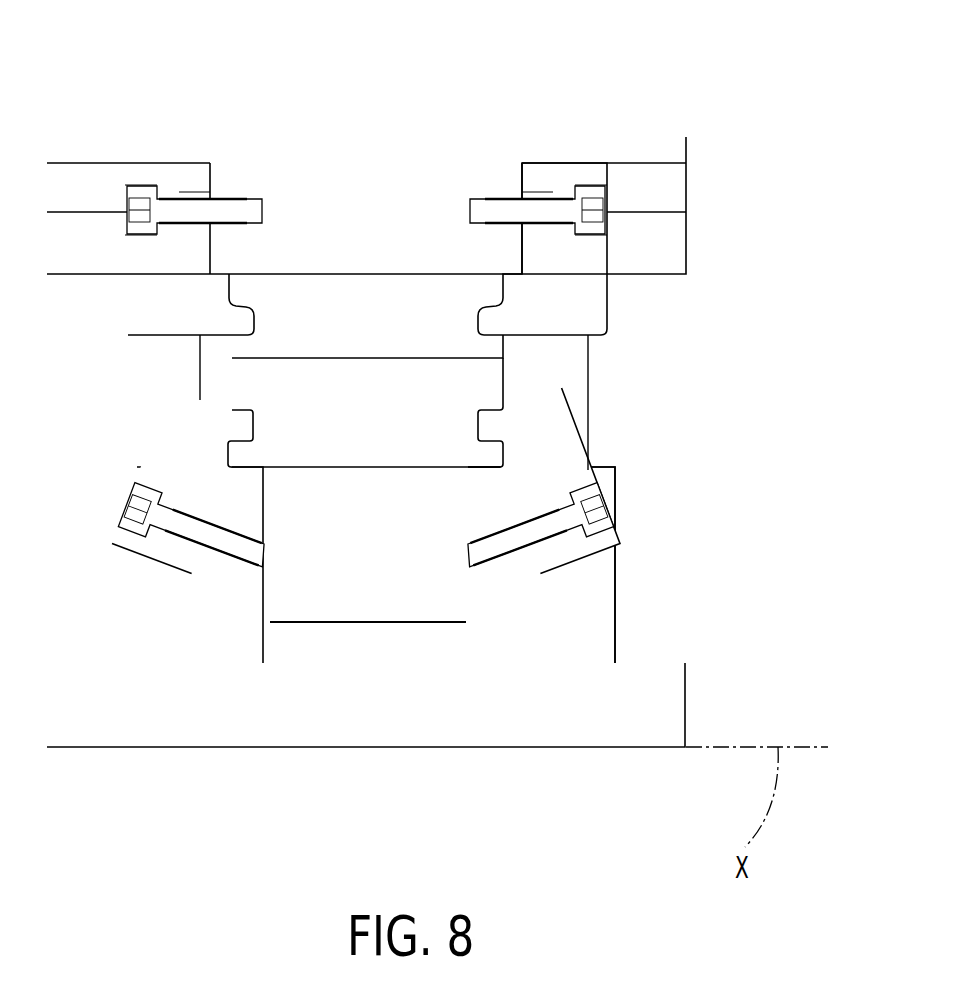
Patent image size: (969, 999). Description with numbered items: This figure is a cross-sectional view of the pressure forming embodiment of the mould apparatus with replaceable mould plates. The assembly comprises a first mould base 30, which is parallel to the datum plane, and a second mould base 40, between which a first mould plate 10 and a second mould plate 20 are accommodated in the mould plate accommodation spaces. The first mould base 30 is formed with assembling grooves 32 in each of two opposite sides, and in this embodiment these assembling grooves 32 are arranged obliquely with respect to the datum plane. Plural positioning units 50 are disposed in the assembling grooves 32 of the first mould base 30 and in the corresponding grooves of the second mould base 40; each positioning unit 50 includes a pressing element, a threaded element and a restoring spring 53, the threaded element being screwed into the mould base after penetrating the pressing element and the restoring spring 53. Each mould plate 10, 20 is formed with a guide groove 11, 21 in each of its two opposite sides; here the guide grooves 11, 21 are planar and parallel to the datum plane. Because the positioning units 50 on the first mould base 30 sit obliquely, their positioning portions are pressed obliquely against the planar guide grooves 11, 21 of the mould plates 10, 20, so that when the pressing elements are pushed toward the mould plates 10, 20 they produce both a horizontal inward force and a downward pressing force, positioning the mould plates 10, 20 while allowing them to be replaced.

The second mould base 40 is at (462, 122).
The first mould base 30 is at (165, 762).
The assembling groove 32 is at (610, 492).
The first mould plate 10 is at (208, 382).
The second mould plate 20 is at (208, 346).
The guide groove 21 is at (257, 322).
The guide groove 11 is at (250, 413).
The positioning unit 50 is at (612, 432).
The restoring spring 53 is at (558, 540).